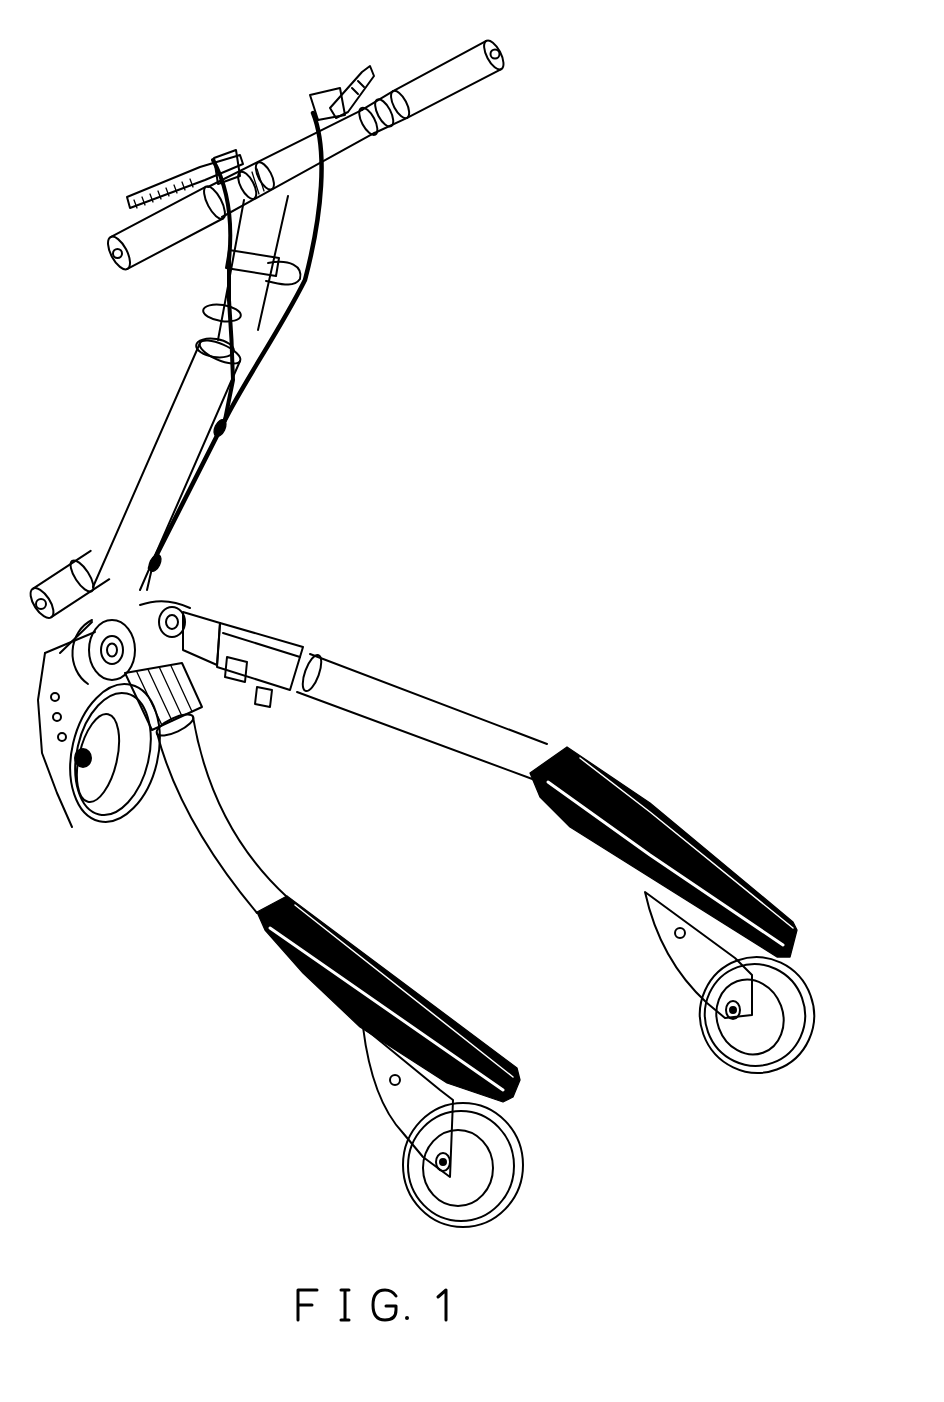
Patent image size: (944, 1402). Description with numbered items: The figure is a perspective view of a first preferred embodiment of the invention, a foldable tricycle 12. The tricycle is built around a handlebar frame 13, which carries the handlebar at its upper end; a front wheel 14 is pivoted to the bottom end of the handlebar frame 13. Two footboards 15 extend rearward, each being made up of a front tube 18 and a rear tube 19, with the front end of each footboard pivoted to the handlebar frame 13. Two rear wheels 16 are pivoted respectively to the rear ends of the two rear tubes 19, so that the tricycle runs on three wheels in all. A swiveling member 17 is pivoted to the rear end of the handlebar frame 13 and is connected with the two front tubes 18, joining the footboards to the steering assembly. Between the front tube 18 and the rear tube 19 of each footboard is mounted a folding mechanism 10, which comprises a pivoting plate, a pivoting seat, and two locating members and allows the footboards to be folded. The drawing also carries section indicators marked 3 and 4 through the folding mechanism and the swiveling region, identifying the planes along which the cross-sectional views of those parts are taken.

The foldable tricycle 12 is at (662, 322).
The folding mechanism 10 is at (307, 607).
The handlebar frame 13 is at (178, 443).
The front wheel 14 is at (115, 793).
The footboards 15 is at (458, 723).
The rear wheels 16 is at (733, 1043).
The swiveling member 17 is at (153, 593).
The front tube 18 is at (220, 627).
The rear tube 19 is at (352, 677).
The section line 3- 3 is at (237, 742).
The section line 4- 4 is at (125, 640).